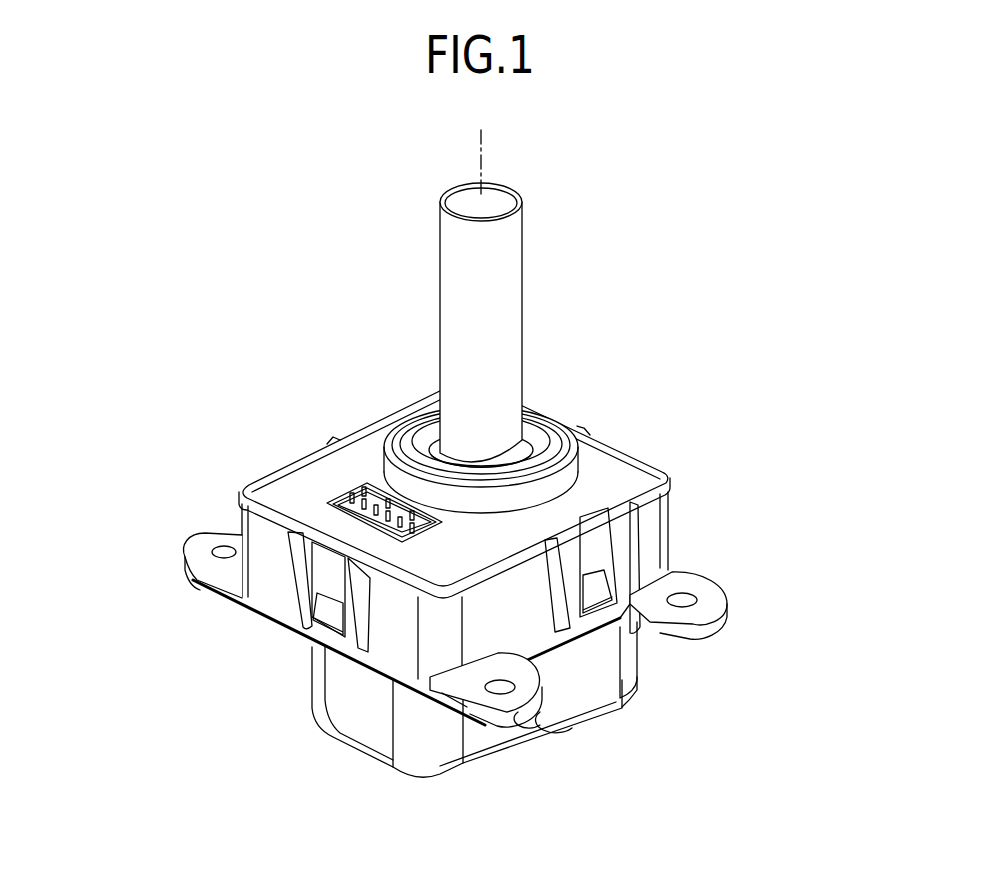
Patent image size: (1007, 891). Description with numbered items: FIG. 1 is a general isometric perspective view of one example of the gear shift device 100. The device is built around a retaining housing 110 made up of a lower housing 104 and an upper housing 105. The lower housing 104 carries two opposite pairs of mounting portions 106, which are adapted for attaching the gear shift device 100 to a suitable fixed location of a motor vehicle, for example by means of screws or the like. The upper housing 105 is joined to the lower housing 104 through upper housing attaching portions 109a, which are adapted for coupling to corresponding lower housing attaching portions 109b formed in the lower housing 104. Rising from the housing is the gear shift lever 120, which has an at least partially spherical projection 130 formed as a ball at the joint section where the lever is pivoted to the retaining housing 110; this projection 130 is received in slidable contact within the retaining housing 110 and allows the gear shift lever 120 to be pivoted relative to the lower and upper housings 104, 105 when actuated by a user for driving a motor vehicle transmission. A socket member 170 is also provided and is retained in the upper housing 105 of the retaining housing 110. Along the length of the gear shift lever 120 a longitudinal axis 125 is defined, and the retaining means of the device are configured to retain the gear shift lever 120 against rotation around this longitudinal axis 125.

The gear shift device 100 is at (228, 339).
The lower housing 104 is at (352, 770).
The upper housing 105 is at (383, 676).
The mounting portions 106 is at (205, 555).
The upper housing attaching portions 109a is at (323, 633).
The lower housing attaching portions 109b is at (313, 613).
The retaining housing 110 is at (240, 800).
The gear shift lever 120 is at (502, 281).
The longitudinal axis 125 is at (481, 162).
The at least partially spherical projection 130 is at (513, 448).
The socket member 170 is at (420, 440).